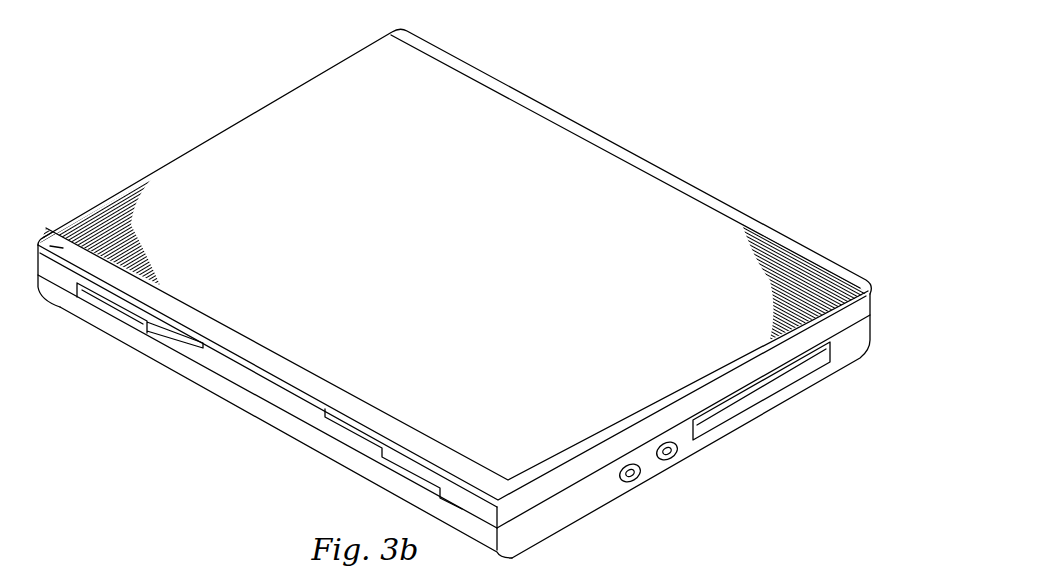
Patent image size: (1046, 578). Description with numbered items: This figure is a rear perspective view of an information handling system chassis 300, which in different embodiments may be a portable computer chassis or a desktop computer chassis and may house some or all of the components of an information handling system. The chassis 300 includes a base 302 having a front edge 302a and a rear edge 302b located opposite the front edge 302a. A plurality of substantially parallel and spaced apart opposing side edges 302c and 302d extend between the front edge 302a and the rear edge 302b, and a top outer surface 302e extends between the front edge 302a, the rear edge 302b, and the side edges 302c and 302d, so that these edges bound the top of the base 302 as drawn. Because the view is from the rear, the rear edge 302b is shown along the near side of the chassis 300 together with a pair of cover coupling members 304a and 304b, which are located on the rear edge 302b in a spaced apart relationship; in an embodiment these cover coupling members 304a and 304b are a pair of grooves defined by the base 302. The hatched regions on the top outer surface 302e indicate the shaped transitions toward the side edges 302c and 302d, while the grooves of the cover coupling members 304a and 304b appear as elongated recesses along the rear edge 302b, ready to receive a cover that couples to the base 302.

The information handling system chassis 300 is at (454, 280).
The base 302 is at (454, 293).
The front edge 302a is at (627, 152).
The rear edge 302b is at (258, 385).
The side edge 302c is at (563, 480).
The side edge 302d is at (213, 137).
The top outer surface 302e is at (312, 88).
The cover coupling member 304a is at (172, 336).
The cover coupling member 304b is at (348, 428).